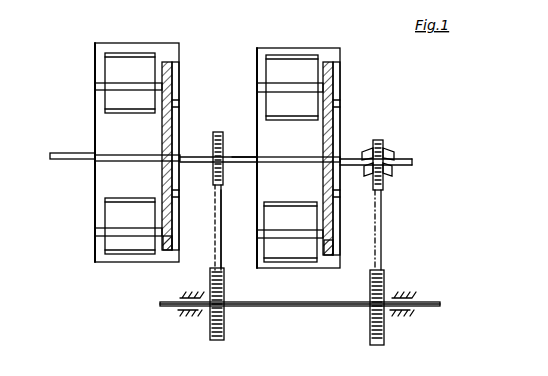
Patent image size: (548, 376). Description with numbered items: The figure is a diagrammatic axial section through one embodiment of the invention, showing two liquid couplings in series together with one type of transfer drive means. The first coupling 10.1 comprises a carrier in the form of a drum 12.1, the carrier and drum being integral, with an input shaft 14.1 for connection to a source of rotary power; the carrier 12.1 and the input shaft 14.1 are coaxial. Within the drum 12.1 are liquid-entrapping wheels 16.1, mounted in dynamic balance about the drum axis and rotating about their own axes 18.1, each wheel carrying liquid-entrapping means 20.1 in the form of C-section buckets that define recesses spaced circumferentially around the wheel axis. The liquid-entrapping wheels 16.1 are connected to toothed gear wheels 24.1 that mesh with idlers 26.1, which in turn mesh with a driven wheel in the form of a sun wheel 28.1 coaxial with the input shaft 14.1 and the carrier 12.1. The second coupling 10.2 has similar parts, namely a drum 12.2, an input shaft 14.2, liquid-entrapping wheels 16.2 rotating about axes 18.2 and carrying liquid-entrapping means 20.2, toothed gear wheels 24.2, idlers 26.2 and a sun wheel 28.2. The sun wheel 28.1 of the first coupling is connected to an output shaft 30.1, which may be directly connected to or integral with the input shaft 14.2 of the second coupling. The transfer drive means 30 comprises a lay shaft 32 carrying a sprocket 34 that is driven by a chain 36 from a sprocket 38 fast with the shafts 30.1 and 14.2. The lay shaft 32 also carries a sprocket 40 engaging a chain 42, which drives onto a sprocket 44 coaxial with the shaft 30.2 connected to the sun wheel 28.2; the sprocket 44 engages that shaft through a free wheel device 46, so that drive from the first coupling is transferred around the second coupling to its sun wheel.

The first coupling 10.1 is at (93, 127).
The second coupling 10.2 is at (345, 100).
The drum 12.1 is at (94, 178).
The drum 12.2 is at (256, 72).
The input shaft 14.1 is at (60, 153).
The input shaft 14.2 is at (246, 163).
The liquid-entrapping wheels 16.1 is at (172, 60).
The liquid-entrapping wheels 16.2 is at (326, 58).
The axes 18.1 is at (133, 84).
The axes 18.2 is at (268, 85).
The liquid-entrapping means 20.1 is at (150, 113).
The liquid-entrapping means 20.2 is at (303, 118).
The toothed gear wheels 24.1 is at (174, 73).
The toothed gear wheels 24.2 is at (335, 76).
The idlers 26.1 is at (173, 110).
The idlers 26.2 is at (336, 122).
The sun wheel 28.1 is at (160, 160).
The sun wheel 28.2 is at (385, 125).
The transfer drive means 30 is at (250, 310).
The output shaft 30.1 is at (191, 150).
The shaft 30.2 is at (388, 148).
The lay shaft 32 is at (300, 317).
The sprocket 34 is at (224, 290).
The chain 36 is at (226, 245).
The sprocket 38 is at (222, 134).
The sprocket 40 is at (384, 292).
The chain 42 is at (380, 268).
The sprocket 44 is at (390, 168).
The free wheel device 46 is at (386, 162).